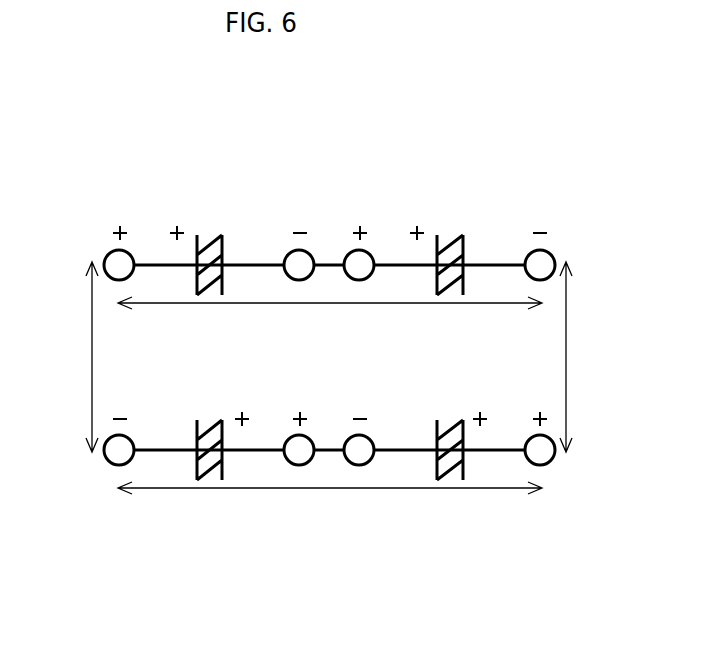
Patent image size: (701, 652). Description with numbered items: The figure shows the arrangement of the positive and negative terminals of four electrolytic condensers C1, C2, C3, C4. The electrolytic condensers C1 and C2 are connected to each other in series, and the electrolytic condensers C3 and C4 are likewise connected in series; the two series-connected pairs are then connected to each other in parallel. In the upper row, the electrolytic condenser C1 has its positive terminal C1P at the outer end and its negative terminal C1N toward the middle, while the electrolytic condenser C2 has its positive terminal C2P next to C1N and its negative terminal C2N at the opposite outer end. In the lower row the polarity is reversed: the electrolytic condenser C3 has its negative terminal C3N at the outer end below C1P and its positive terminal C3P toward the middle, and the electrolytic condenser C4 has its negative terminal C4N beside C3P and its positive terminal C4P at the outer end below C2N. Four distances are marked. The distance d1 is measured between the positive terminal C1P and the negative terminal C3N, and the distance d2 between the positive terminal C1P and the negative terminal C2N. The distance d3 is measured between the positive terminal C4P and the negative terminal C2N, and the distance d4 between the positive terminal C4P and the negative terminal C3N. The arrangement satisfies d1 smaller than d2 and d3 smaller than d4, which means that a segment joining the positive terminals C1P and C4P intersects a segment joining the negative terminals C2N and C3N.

The electrolytic condenser C1 is at (200, 227).
The electrolytic condenser C2 is at (441, 227).
The electrolytic condenser C3 is at (218, 483).
The electrolytic condenser C4 is at (457, 483).
The positive terminal of the electrolytic condenser C1 C1P is at (107, 253).
The negative terminal of the electrolytic condenser C1 C1N is at (288, 253).
The positive terminal of the electrolytic condenser C2 C2P is at (372, 253).
The negative terminal of the electrolytic condenser C2 C2N is at (555, 253).
The negative terminal of the electrolytic condenser C3 C3N is at (107, 463).
The positive terminal of the electrolytic condenser C3 C3P is at (288, 463).
The negative terminal of the electrolytic condenser C4 C4N is at (372, 463).
The positive terminal of the electrolytic condenser C4 C4P is at (555, 463).
The distance d1 is at (72, 357).
The distance d2 is at (330, 319).
The distance d3 is at (586, 357).
The distance d4 is at (330, 506).